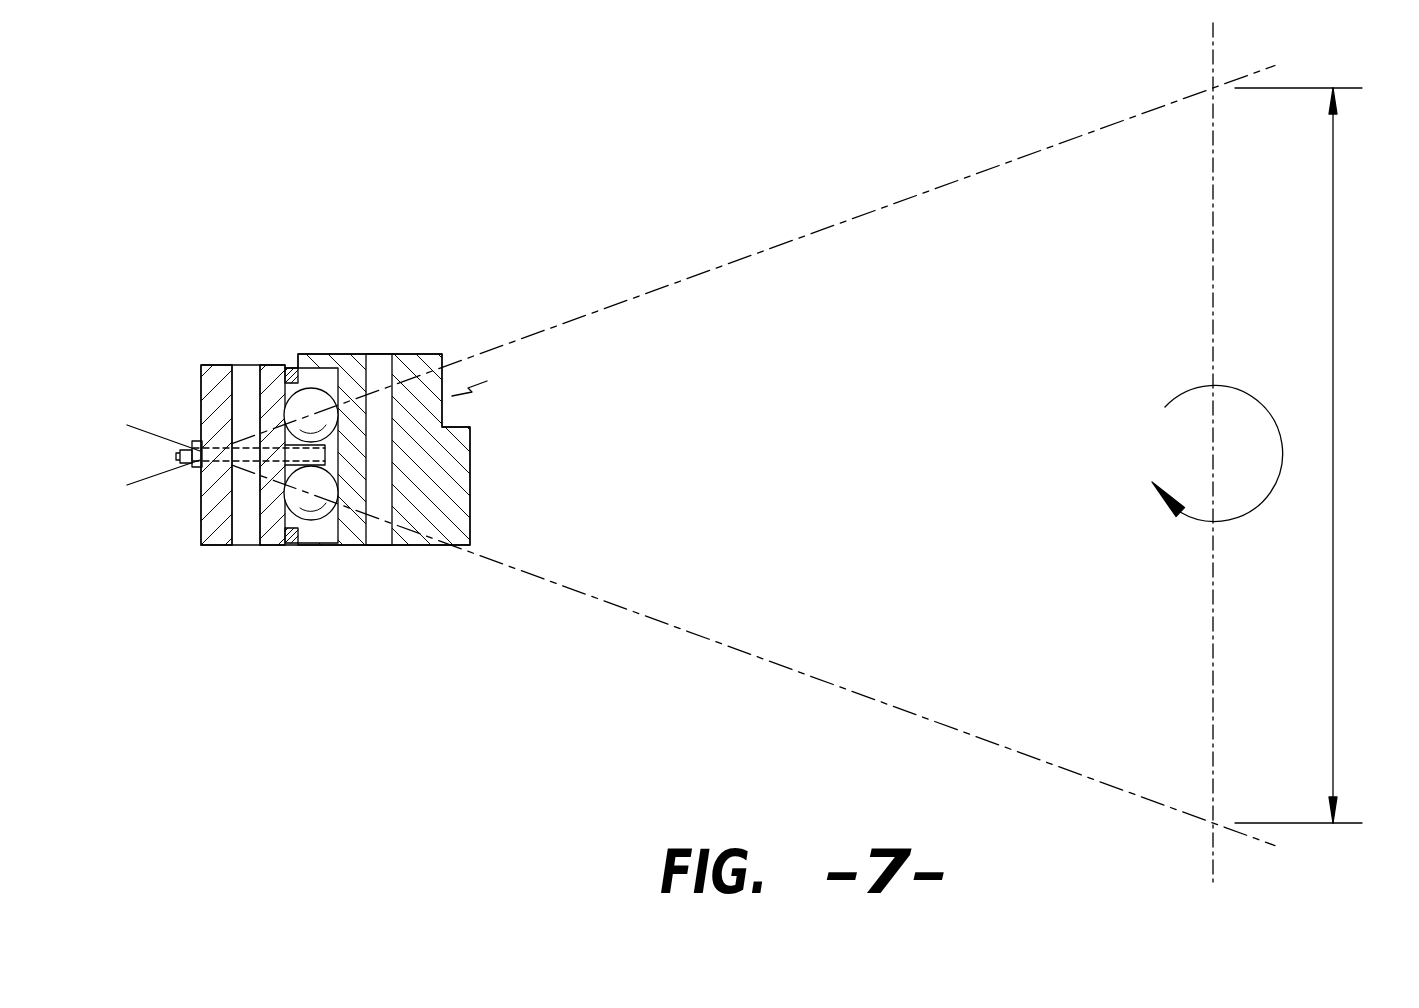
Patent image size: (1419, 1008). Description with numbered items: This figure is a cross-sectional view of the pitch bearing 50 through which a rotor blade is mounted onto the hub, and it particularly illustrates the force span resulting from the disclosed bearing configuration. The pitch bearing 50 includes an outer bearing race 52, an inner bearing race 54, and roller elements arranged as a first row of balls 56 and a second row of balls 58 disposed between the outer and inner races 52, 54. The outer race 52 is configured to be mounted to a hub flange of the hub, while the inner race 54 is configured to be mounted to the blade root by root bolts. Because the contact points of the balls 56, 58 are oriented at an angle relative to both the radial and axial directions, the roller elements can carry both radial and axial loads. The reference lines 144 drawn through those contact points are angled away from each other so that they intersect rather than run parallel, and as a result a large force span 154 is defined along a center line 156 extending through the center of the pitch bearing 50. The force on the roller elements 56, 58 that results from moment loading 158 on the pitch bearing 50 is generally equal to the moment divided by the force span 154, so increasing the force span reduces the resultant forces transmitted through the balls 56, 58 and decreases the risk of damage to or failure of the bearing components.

The pitch bearing 50 is at (222, 242).
The outer bearing race 52 is at (202, 395).
The inner bearing race 54 is at (347, 366).
The first row of balls 56 is at (318, 402).
The second row of balls 58 is at (312, 505).
The reference lines 144 is at (760, 250).
The force span 154 is at (1335, 290).
The center line 156 is at (1213, 280).
The moment loading 158 is at (1188, 392).